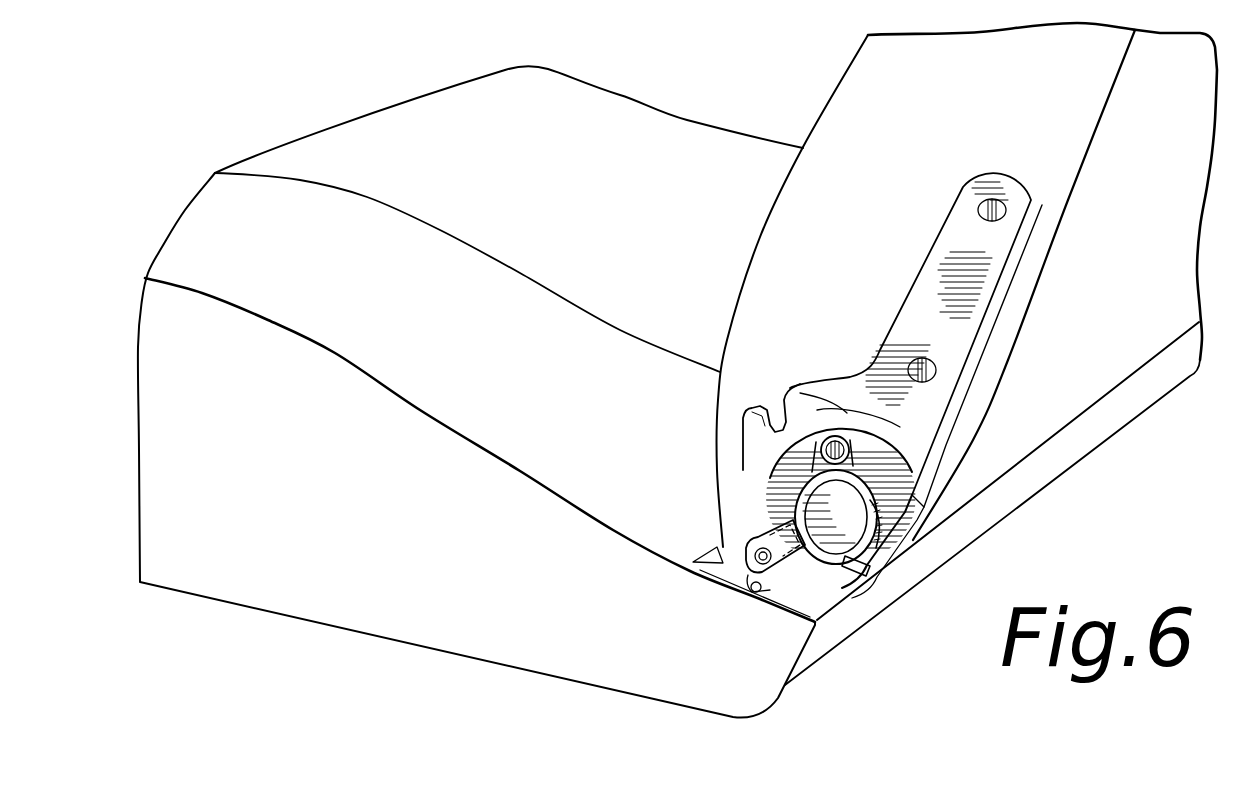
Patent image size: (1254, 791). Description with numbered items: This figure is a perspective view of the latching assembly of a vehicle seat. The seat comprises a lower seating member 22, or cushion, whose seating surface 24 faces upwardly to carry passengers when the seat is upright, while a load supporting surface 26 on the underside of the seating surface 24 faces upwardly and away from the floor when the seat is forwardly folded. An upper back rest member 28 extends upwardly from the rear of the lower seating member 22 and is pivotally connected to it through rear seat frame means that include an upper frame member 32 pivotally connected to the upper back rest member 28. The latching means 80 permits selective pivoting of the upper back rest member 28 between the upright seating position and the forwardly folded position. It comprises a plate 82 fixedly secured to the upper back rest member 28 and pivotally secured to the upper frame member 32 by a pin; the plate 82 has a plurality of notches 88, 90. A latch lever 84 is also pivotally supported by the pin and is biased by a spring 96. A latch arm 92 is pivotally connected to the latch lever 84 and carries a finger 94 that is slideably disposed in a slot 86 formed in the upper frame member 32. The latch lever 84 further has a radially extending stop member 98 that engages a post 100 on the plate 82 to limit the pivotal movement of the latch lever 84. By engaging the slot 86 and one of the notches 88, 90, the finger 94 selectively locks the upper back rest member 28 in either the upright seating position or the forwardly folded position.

The lower seating member 22 is at (613, 660).
The seating surface 24 is at (322, 137).
The load supporting surface 26 is at (486, 663).
The upper back rest member 28 is at (1098, 136).
The upper frame member 32 is at (700, 570).
The latching means 80 is at (985, 338).
The plate 82 is at (987, 267).
The latch lever 84 is at (855, 520).
The slot 86 is at (758, 592).
The notch 88 is at (858, 572).
The notch 90 is at (753, 420).
The latch arm 92 is at (780, 530).
The finger 94 is at (793, 537).
The spring 96 is at (853, 437).
The stop member 98 is at (813, 458).
The post 100 is at (820, 440).